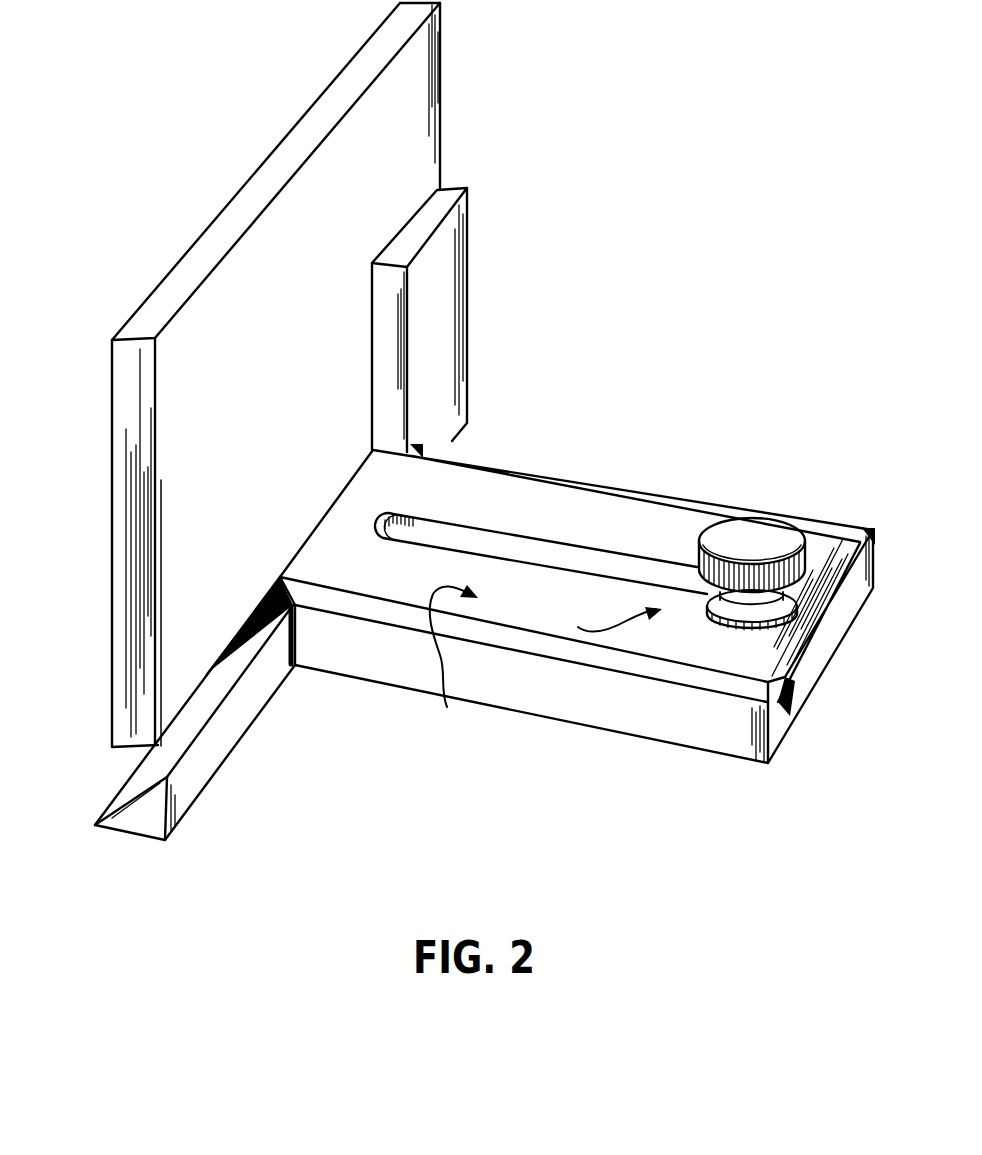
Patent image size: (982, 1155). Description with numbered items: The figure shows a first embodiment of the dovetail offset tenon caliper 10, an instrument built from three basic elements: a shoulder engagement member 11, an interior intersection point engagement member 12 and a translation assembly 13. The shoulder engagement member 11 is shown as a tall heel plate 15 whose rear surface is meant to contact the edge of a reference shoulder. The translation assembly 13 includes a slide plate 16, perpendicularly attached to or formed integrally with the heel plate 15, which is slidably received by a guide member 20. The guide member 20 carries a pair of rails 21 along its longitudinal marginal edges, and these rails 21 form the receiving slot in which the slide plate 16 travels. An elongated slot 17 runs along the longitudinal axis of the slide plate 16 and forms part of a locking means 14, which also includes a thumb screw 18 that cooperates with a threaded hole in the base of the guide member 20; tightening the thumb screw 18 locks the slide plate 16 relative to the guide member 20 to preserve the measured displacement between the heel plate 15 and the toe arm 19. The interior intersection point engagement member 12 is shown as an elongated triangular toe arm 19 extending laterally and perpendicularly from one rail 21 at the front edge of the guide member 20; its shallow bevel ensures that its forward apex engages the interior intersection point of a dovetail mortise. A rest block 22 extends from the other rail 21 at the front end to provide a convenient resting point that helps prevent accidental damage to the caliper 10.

The dovetail offset tenon caliper 10 is at (664, 368).
The shoulder engagement member 11 is at (418, 89).
The interior intersection point engagement member 12 is at (92, 783).
The translation assembly 13 is at (454, 660).
The locking means 14 is at (607, 622).
The heel plate 15 is at (281, 153).
The slide plate 16 is at (590, 515).
The elongated slot 17 is at (481, 542).
The thumb screw 18 is at (754, 530).
The toe arm 19 is at (222, 757).
The guide member 20 is at (808, 688).
The rails 21 is at (833, 530).
The rest block 22 is at (450, 325).